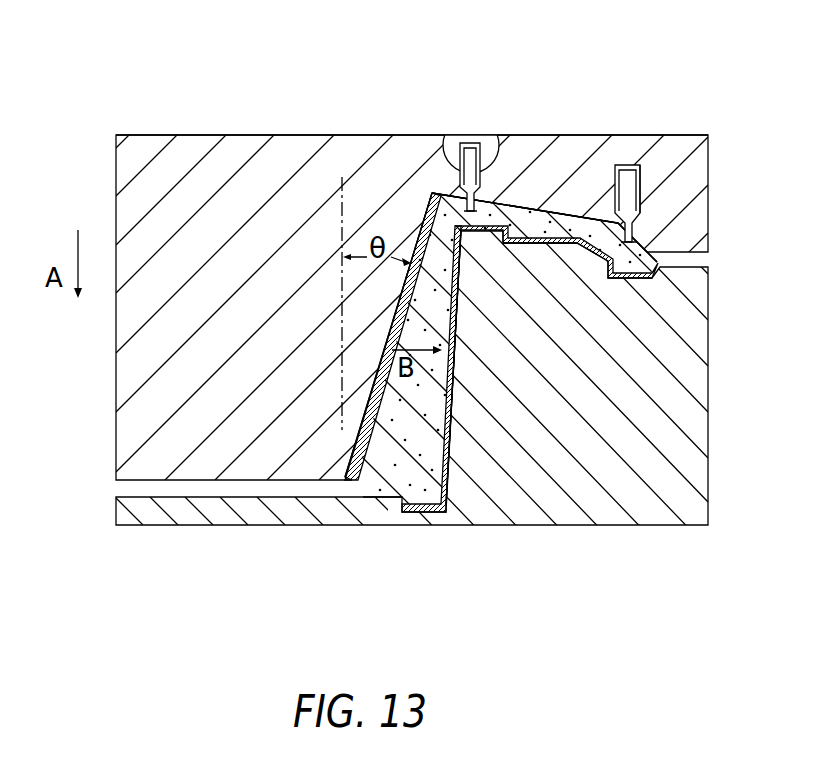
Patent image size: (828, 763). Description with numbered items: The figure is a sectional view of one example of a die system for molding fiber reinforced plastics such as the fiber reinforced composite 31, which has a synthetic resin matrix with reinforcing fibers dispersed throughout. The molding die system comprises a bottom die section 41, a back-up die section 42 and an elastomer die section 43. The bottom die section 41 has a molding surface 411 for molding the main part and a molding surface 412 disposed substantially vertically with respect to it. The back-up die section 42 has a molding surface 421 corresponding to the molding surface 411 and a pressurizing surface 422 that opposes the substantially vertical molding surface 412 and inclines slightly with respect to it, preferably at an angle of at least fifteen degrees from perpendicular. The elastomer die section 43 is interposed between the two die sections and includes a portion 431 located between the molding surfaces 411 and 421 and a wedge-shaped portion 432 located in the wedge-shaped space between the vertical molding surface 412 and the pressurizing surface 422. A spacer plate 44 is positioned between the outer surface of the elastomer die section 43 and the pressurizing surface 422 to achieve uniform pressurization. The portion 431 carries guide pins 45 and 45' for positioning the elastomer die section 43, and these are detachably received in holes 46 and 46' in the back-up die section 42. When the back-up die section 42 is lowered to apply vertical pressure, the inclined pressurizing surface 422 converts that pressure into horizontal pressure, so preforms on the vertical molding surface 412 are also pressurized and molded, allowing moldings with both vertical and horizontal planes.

The fiber reinforced composite 31 is at (618, 223).
The bottom die section 41 is at (625, 485).
The molding surface 411 is at (572, 245).
The molding surface 412 is at (462, 378).
The back-up die section 42 is at (281, 170).
The molding surface 421 is at (530, 205).
The pressurizing surface 422 is at (373, 377).
The elastomer die section 43 is at (427, 458).
The portion 431 is at (562, 207).
The wedge-shaped portion 432 is at (440, 322).
The spacer plate 44 is at (397, 502).
The guide pin 45 is at (482, 131).
The hole 46 is at (437, 154).
The guide pin 45' is at (673, 150).
The hole 46' is at (612, 163).